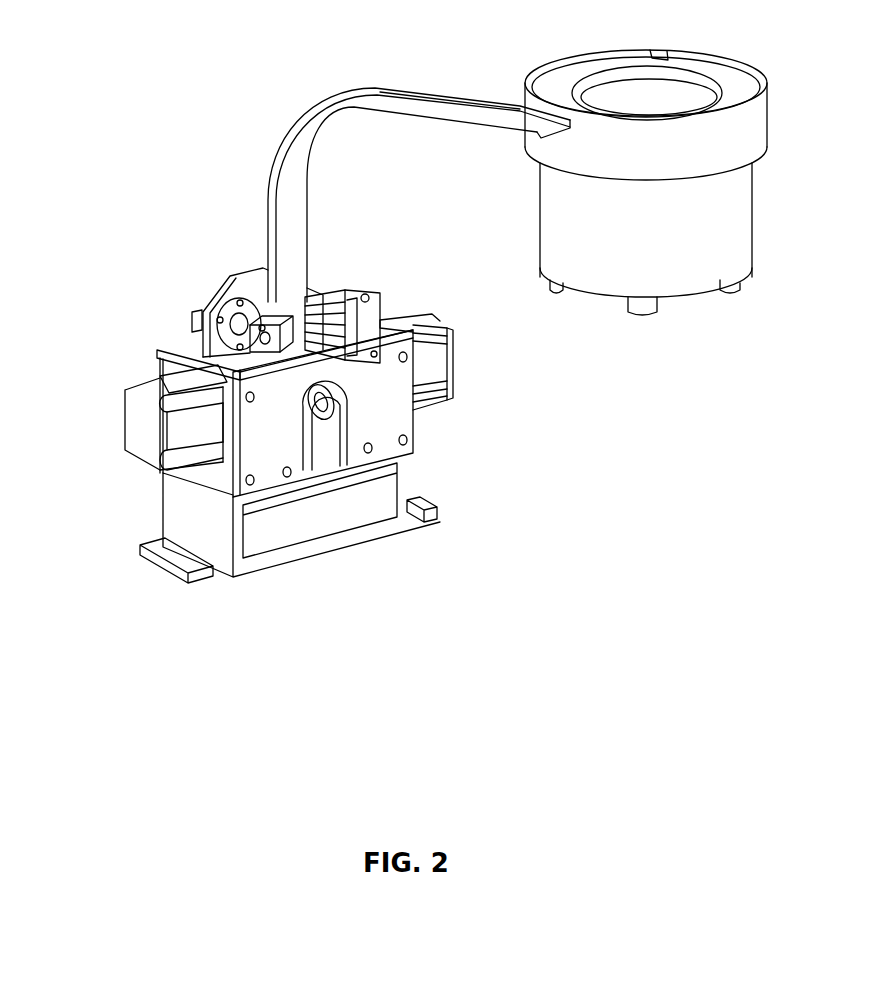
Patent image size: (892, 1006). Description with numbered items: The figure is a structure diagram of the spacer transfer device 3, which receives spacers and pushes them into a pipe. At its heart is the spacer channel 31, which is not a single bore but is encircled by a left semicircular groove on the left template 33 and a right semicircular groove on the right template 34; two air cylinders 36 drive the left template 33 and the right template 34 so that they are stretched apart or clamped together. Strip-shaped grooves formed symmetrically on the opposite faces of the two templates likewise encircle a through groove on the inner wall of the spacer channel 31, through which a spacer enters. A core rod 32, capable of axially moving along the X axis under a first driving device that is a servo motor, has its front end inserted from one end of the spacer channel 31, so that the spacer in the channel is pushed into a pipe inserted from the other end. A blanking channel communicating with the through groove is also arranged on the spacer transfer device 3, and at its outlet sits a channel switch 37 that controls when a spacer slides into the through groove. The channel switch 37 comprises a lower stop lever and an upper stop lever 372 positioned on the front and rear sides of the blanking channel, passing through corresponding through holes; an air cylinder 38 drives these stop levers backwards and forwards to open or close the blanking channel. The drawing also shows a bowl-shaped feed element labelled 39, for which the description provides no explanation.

The spacer transfer device 3 is at (217, 503).
The spacer channel 31 is at (322, 403).
The core rod 32 is at (290, 273).
The left template 33 is at (308, 435).
The right template 34 is at (338, 433).
The air cylinder 36 is at (152, 430).
The channel switch 37 is at (200, 307).
The upper stop lever 372 is at (266, 277).
The air cylinder 38 is at (362, 342).
The hopper 39 is at (642, 227).